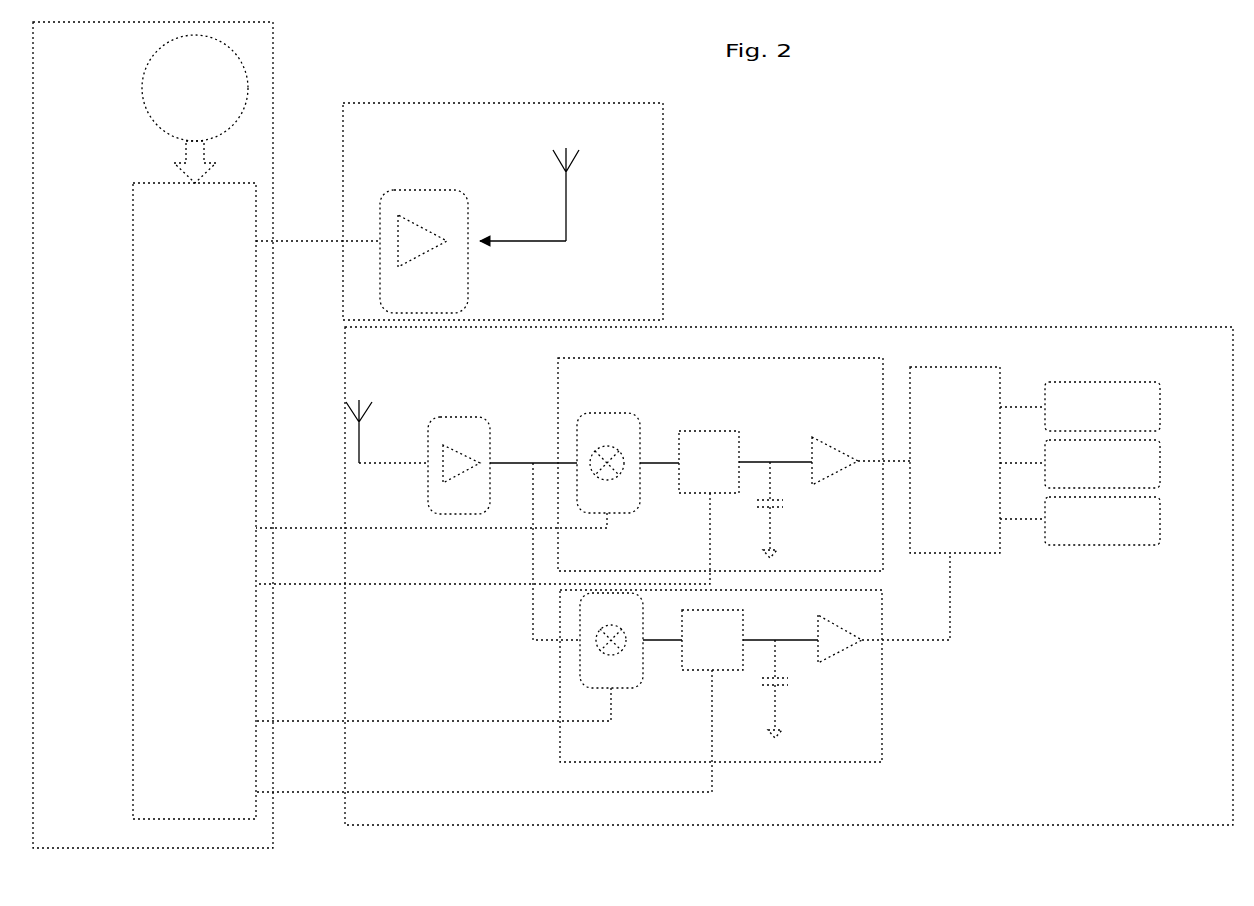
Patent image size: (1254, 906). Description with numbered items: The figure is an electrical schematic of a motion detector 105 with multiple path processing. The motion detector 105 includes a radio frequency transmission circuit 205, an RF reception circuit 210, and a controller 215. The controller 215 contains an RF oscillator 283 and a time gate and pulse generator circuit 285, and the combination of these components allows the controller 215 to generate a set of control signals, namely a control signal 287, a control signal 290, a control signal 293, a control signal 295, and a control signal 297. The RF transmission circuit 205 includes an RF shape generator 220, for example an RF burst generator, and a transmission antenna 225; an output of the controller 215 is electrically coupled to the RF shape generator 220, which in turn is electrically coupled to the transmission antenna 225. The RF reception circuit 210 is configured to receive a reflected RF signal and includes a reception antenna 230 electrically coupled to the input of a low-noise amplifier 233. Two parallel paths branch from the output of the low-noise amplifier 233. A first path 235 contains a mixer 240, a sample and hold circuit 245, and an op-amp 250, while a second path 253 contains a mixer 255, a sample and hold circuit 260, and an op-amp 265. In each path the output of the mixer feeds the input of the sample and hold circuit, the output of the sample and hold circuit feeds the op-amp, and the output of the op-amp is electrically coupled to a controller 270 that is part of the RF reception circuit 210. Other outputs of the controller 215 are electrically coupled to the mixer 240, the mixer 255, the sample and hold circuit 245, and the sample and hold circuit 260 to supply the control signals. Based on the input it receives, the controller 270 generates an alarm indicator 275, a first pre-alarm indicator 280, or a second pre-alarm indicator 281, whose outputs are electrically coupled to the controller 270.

The motion detector 105 is at (946, 220).
The RF transmission circuit 205 is at (663, 208).
The RF reception circuit 210 is at (790, 328).
The controller 215 is at (150, 845).
The RF shape generator 220 is at (470, 290).
The transmission antenna 225 is at (572, 176).
The reception antenna 230 is at (362, 424).
The low-noise amplifier 233 is at (455, 417).
The first path 235 is at (868, 352).
The mixer 240 is at (612, 413).
The sample and hold circuit 245 is at (710, 431).
The op-amp 250 is at (820, 440).
The second path 253 is at (884, 713).
The mixer 255 is at (625, 688).
The sample and hold circuit 260 is at (712, 670).
The op-amp 265 is at (856, 648).
The controller 270 is at (998, 392).
The alarm indicator 275 is at (1160, 462).
The first pre-alarm indicator 280 is at (1102, 545).
The second pre-alarm indicator 281 is at (1160, 405).
The RF oscillator 283 is at (140, 90).
The time gate and pulse generator circuit 285 is at (133, 231).
The control signal 287 is at (290, 238).
The control signal 290 is at (290, 525).
The control signal 293 is at (372, 581).
The control signal 295 is at (398, 718).
The control signal 297 is at (470, 790).